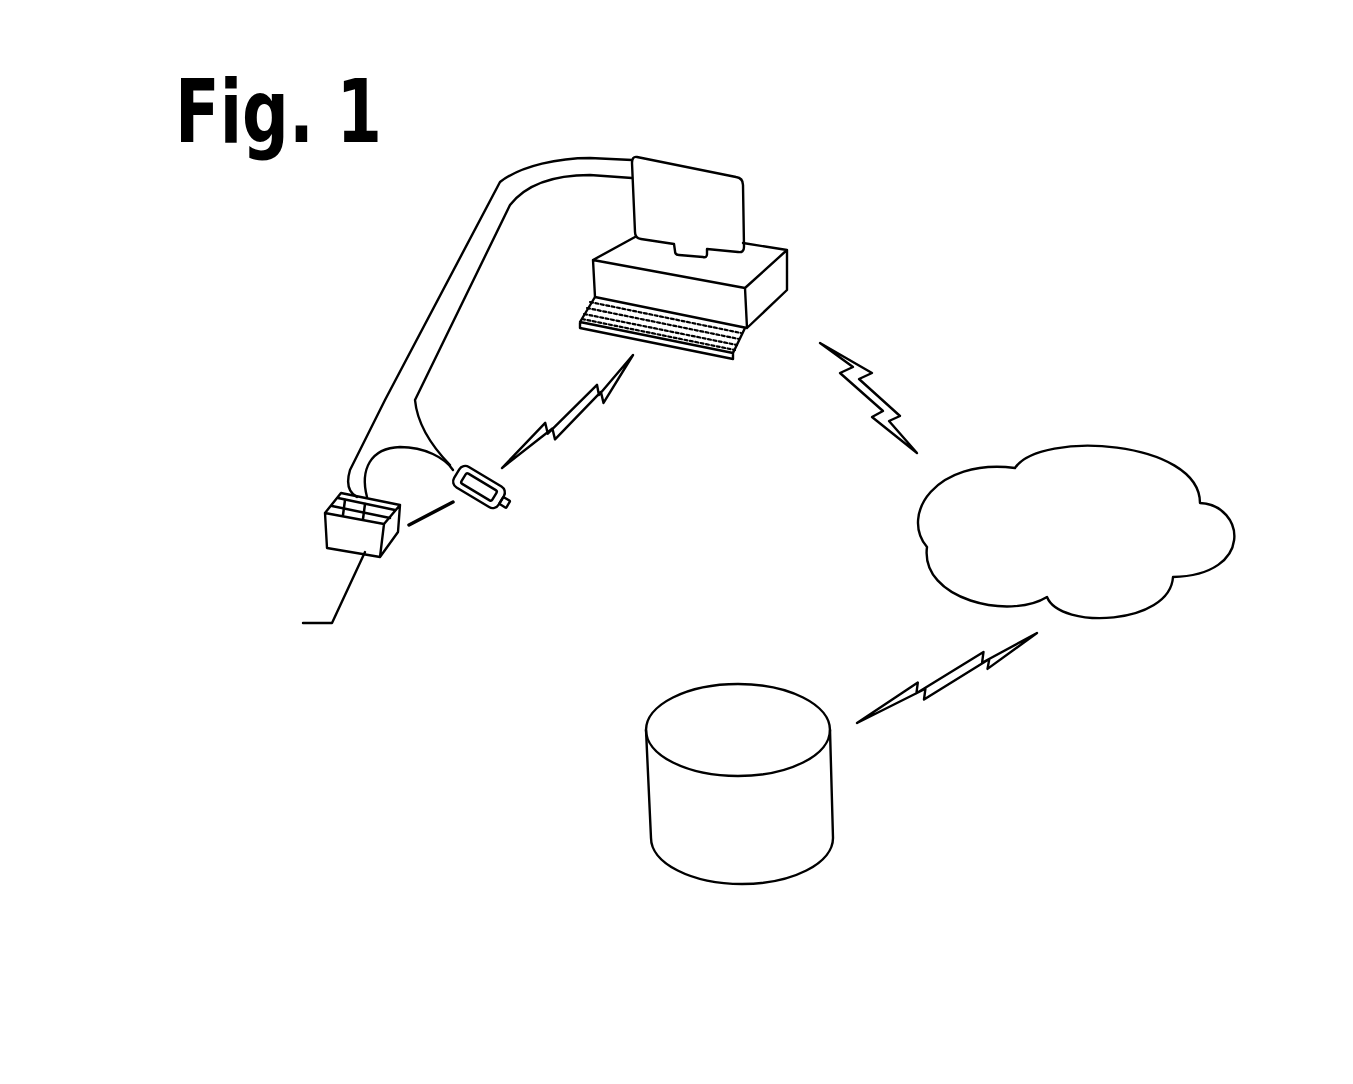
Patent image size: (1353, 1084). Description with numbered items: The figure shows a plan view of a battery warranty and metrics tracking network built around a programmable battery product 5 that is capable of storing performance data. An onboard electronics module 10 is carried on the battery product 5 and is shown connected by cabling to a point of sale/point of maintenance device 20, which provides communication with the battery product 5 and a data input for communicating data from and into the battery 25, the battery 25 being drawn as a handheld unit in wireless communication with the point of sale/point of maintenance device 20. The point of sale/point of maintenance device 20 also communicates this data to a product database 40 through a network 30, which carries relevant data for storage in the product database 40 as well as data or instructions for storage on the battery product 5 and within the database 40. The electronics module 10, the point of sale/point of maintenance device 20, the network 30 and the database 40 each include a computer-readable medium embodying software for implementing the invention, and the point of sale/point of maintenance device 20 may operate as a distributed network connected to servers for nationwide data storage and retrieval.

The battery product 5 is at (320, 522).
The onboard electronics module 10 is at (398, 530).
The point of sale/point of maintenance device 20 is at (773, 212).
The battery 25 is at (510, 505).
The network 30 is at (1137, 480).
The product database 40 is at (817, 792).